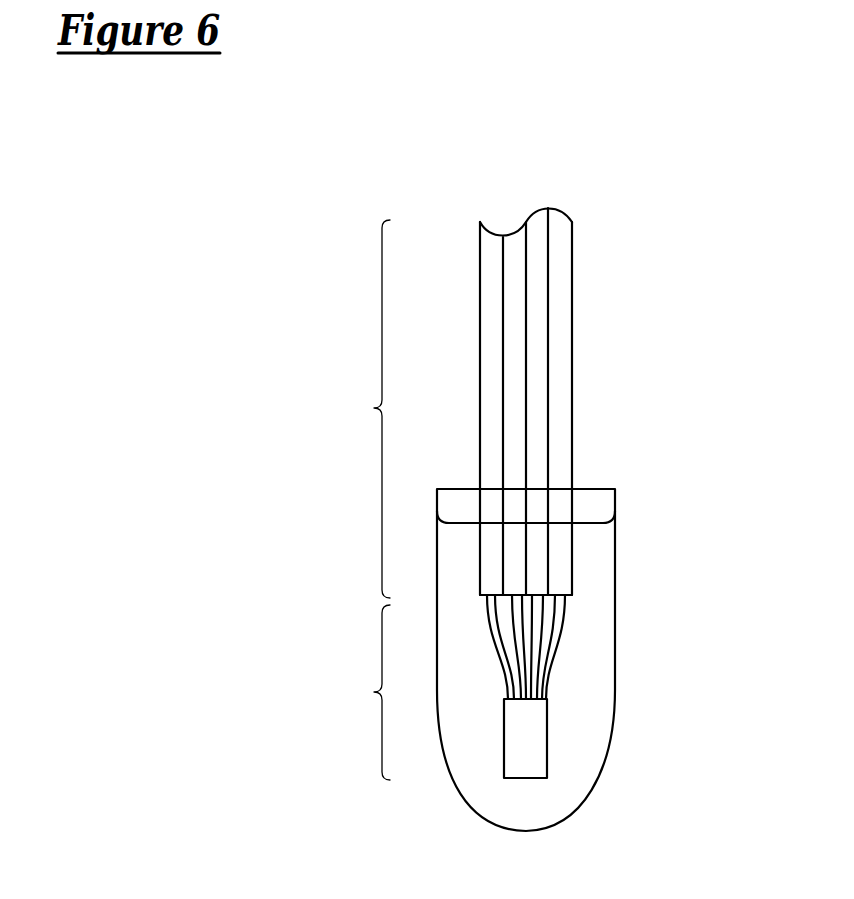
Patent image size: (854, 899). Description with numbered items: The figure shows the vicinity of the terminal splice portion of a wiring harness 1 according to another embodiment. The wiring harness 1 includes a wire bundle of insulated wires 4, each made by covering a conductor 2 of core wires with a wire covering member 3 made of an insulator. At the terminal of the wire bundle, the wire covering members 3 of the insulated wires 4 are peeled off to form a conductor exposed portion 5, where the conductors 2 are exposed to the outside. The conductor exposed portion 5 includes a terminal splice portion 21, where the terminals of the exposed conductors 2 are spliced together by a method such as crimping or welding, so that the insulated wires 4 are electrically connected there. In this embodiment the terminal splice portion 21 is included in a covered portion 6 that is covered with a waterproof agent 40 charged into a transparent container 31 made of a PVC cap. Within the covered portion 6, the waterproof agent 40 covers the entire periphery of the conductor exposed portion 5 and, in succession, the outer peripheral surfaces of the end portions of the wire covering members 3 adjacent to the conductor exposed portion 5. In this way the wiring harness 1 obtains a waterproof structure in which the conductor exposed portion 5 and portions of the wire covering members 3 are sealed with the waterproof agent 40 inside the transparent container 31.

The wiring harness 1 is at (588, 432).
The conductors 2 is at (518, 628).
The wire covering members 3 is at (373, 408).
The insulated wires 4 is at (537, 303).
The conductor exposed portion 5 is at (373, 692).
The covered portion 6 is at (572, 573).
The terminal splice portion 21 is at (537, 753).
The transparent container 31 is at (607, 755).
The waterproof agent 40 is at (582, 671).